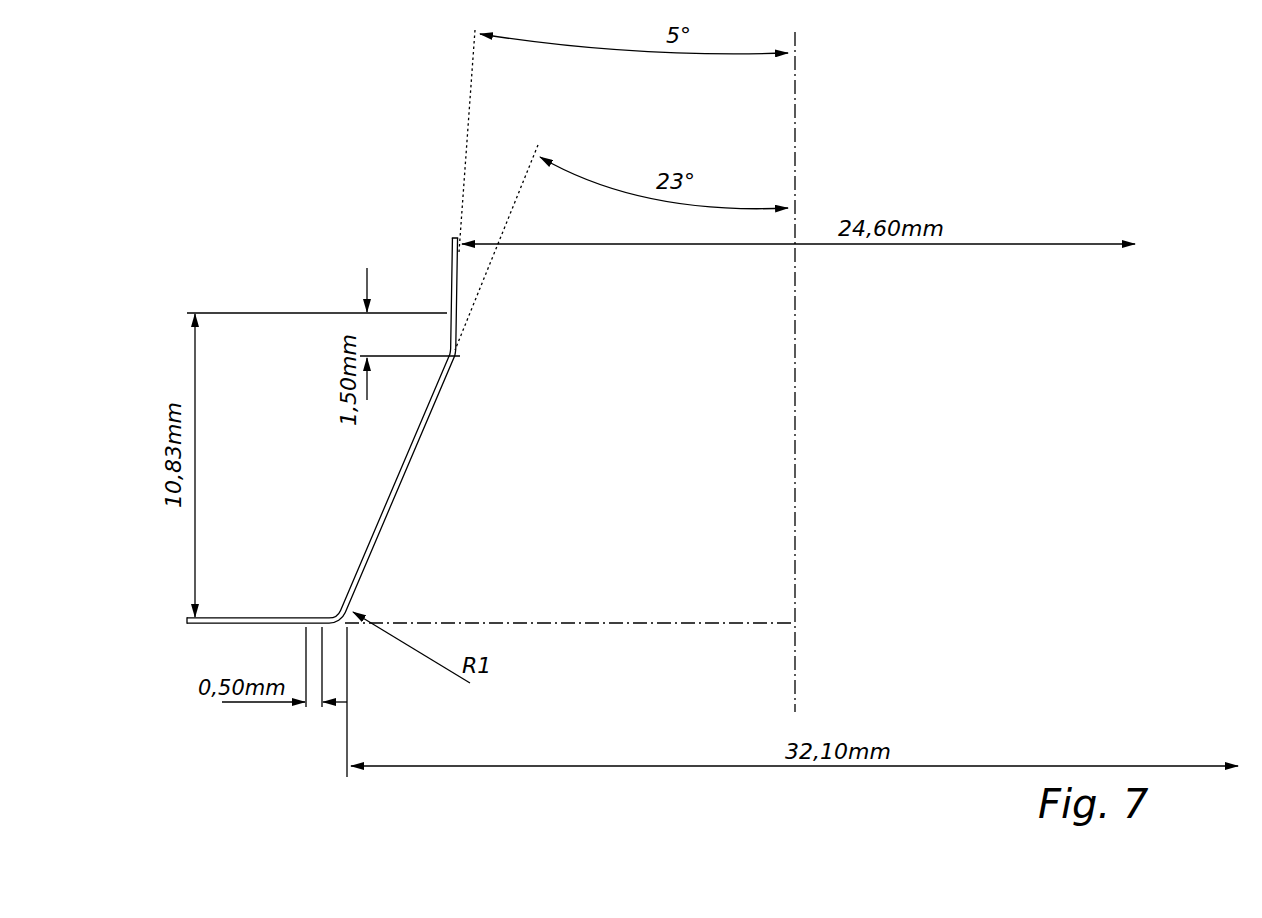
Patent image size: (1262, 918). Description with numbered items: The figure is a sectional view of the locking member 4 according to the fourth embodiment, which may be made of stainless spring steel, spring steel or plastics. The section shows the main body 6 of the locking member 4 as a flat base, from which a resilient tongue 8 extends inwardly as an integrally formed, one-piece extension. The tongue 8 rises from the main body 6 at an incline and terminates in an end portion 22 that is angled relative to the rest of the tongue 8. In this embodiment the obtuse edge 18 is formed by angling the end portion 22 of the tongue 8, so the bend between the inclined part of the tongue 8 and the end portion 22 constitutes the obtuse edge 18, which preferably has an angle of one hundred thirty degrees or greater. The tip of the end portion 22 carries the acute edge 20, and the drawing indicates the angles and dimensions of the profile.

The locking member 4 is at (297, 261).
The main body 6 is at (253, 617).
The tongue 8 is at (410, 465).
The obtuse edge 18 is at (455, 355).
The acute edge 20 is at (452, 236).
The end portion 22 is at (457, 285).